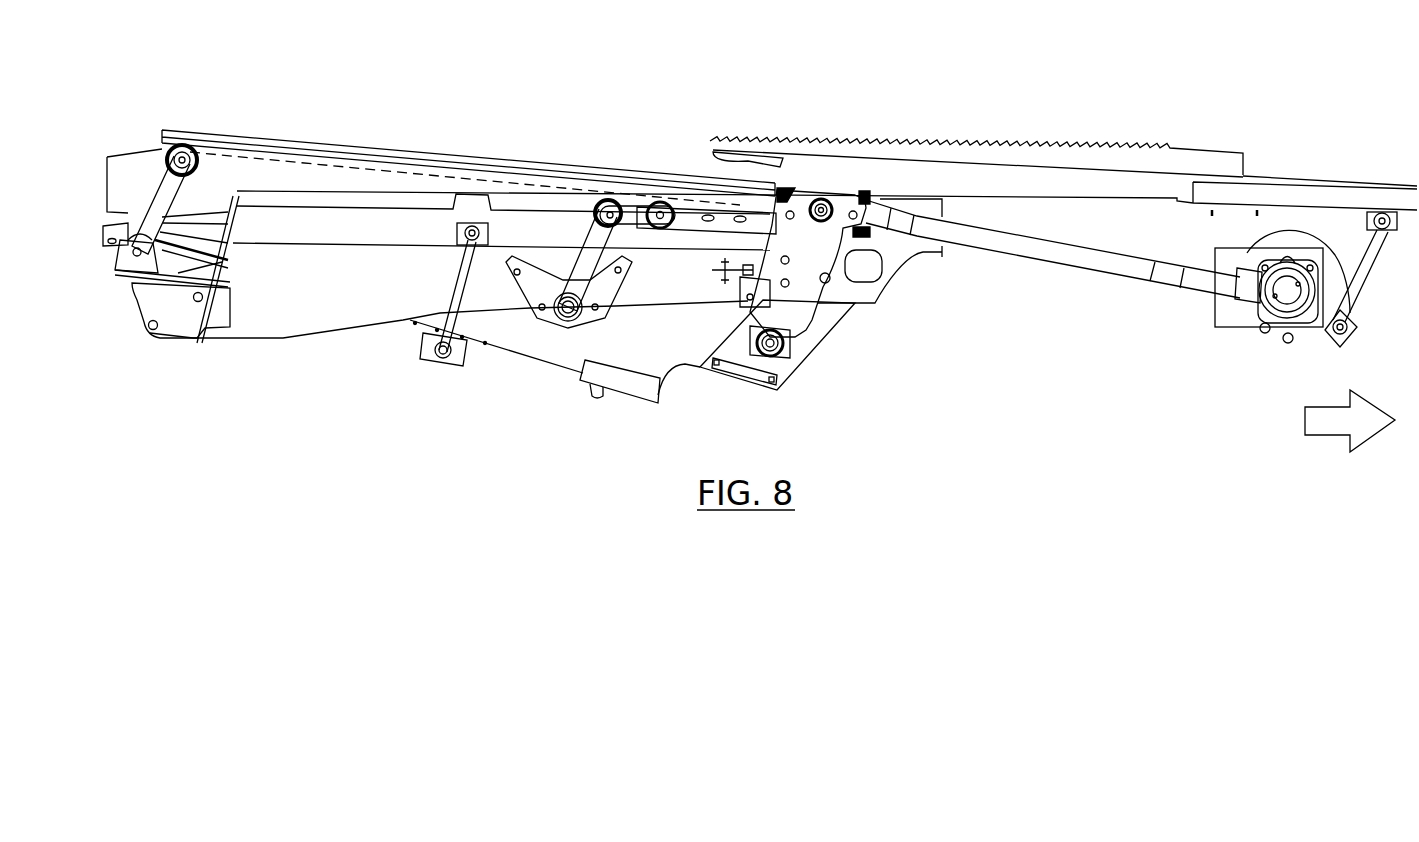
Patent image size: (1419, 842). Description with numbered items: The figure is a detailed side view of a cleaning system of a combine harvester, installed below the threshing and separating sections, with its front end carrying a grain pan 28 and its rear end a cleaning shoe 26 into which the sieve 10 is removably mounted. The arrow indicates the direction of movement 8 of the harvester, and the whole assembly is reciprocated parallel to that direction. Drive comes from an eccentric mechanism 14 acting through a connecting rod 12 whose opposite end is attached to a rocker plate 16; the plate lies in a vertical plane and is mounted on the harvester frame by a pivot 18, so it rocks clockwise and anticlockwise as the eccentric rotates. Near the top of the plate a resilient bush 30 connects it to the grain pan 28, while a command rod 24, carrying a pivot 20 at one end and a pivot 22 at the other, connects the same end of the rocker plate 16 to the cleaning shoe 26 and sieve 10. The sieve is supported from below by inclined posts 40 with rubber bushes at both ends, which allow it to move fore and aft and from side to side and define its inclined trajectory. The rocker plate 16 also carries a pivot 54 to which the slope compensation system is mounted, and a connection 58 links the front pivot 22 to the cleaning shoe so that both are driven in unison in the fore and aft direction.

The direction of movement 8 is at (1322, 437).
The sieve 10 is at (290, 162).
The connecting rod 12 is at (1040, 254).
The eccentric mechanism 14 is at (1263, 307).
The rocker plate 16 is at (820, 252).
The pivot 18 is at (786, 286).
The pivot 20 is at (790, 212).
The pivot 22 is at (660, 205).
The command rod 24 is at (693, 217).
The cleaning shoe 26 is at (235, 137).
The grain pan 28 is at (1103, 182).
The resilient bush 30 is at (832, 213).
The posts 40 is at (163, 185).
The pivot 54 is at (786, 263).
The connection 58 is at (633, 203).